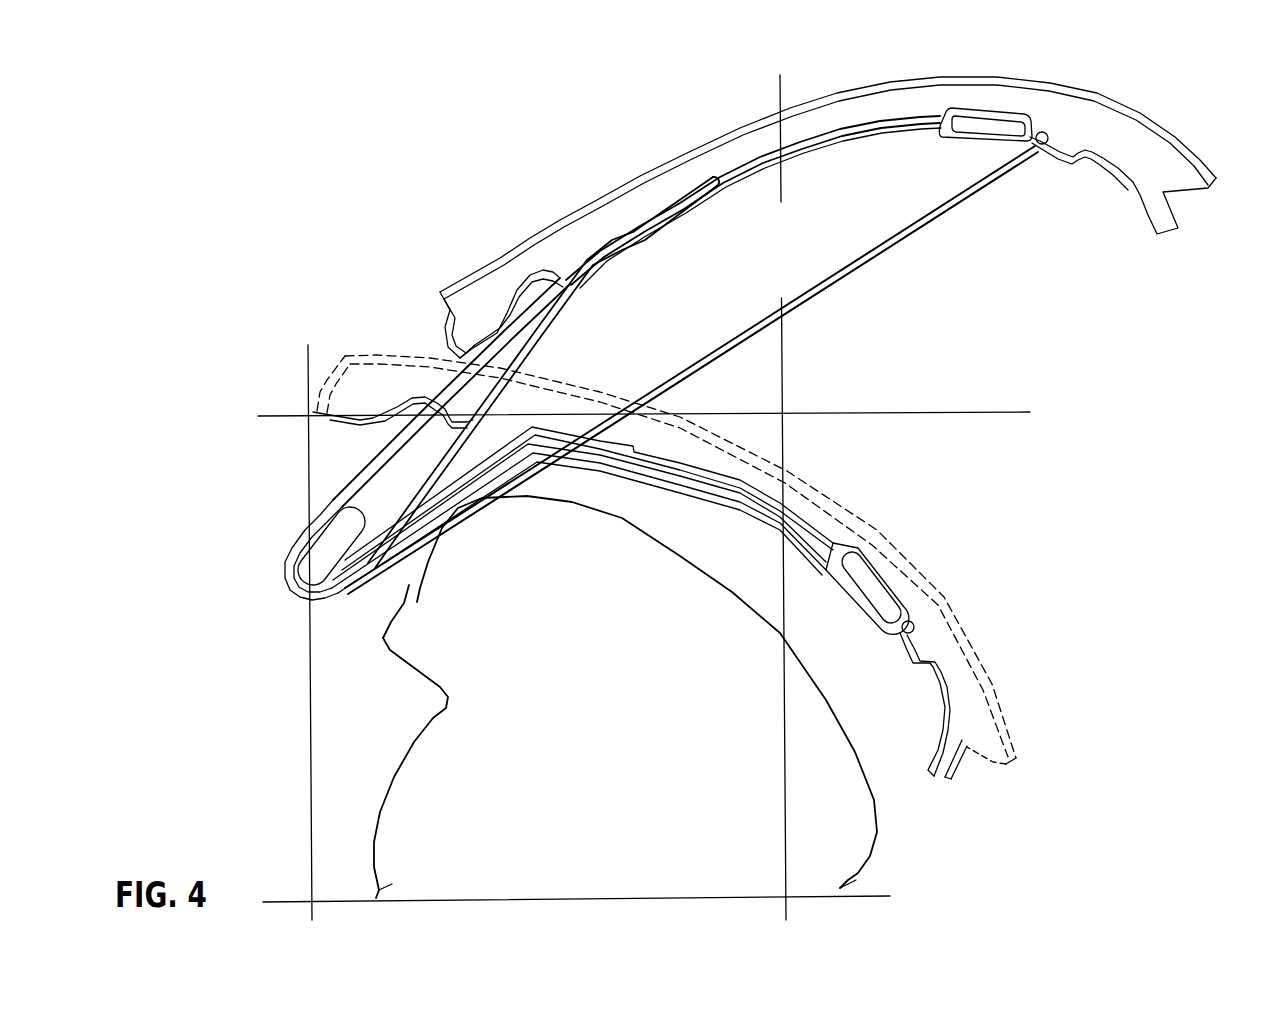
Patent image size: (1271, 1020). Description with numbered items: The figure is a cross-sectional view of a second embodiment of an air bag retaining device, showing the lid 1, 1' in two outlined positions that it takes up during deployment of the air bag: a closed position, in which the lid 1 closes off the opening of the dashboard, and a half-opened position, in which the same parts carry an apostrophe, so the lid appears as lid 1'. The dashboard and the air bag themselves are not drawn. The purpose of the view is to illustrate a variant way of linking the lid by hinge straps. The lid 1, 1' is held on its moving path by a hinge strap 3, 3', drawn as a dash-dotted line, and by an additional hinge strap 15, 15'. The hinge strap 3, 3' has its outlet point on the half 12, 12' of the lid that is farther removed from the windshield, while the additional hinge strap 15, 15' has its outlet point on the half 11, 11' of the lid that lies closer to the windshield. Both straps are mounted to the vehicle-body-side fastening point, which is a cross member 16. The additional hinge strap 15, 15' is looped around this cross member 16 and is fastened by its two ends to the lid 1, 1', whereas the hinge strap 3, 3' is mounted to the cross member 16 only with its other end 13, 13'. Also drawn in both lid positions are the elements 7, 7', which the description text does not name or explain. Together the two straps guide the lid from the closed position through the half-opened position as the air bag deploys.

The lid 1 is at (972, 706).
The lid 1' is at (1086, 196).
The hinge strap 3 is at (579, 517).
The hinge strap 3' is at (691, 370).
The rail with bracket (closed position) 7 is at (626, 530).
The rail with bracket (open position) 7' is at (799, 198).
The half of the lid closer to the windshield 11 is at (356, 353).
The half of the lid closer to the windshield 11' is at (505, 257).
The half of the lid farther removed from the windshield 12 is at (680, 559).
The half of the lid farther removed from the windshield 12' is at (846, 188).
The other end of the hinge strap 13 is at (443, 467).
The other end of the hinge strap 13' is at (543, 372).
The additional hinge strap 15 is at (393, 430).
The additional hinge strap 15' is at (549, 314).
The cross member 16 is at (305, 563).